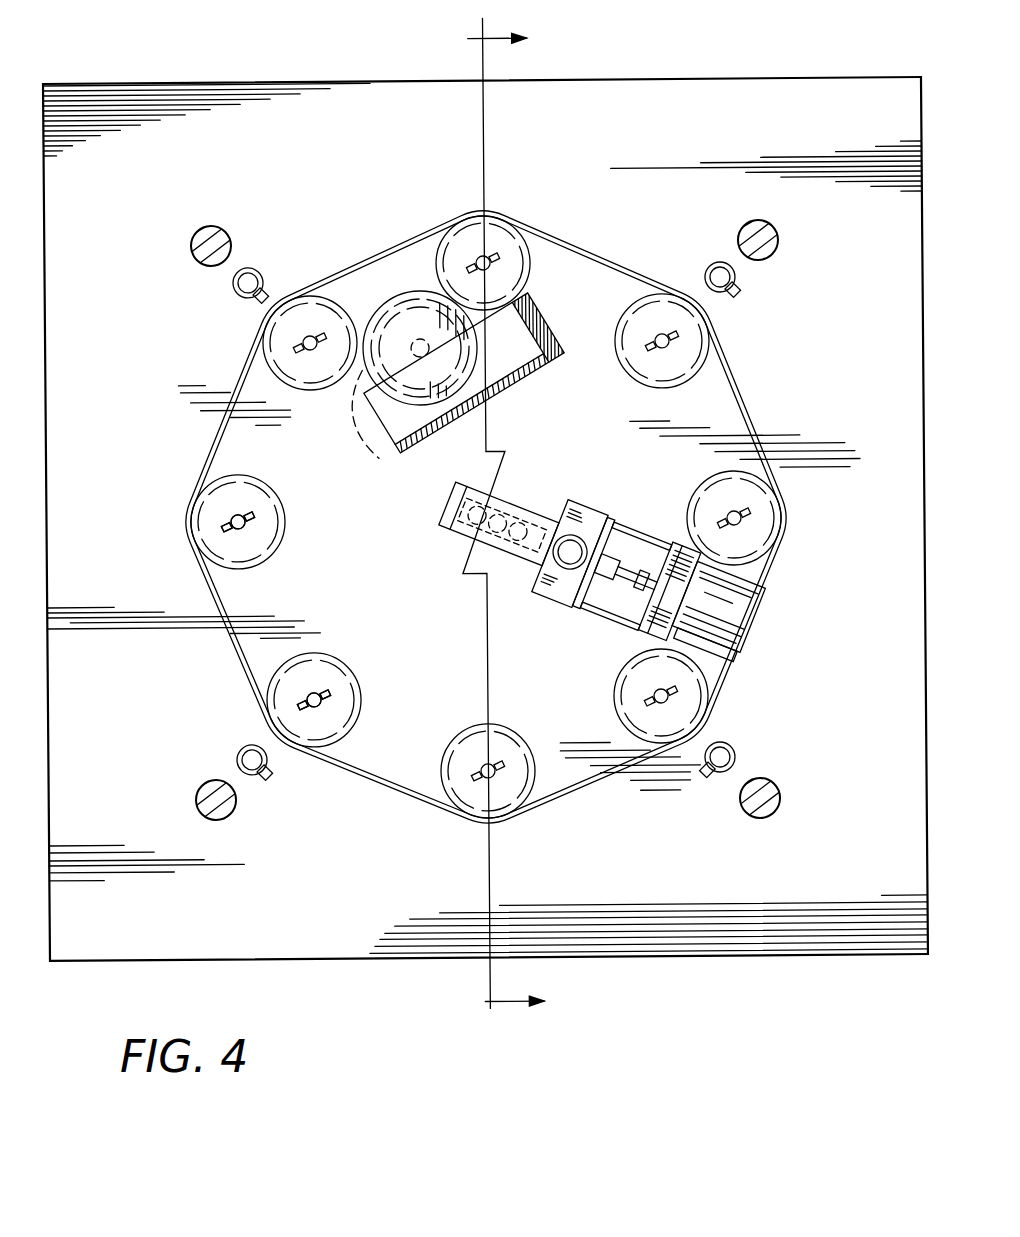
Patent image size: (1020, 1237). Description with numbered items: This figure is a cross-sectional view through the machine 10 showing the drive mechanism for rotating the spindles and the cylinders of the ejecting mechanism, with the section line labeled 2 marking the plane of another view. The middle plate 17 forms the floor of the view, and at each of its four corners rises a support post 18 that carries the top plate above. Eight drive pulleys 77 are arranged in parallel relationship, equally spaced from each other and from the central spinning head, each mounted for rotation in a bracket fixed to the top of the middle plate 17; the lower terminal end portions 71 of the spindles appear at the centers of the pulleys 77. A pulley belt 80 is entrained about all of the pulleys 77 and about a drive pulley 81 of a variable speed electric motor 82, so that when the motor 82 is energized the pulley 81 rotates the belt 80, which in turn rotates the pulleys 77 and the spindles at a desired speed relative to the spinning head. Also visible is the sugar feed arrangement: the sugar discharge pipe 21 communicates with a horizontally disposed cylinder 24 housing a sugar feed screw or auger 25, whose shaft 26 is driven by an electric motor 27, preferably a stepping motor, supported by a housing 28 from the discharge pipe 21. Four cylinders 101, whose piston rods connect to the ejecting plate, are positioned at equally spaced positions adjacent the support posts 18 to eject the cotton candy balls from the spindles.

The machine 10 is at (690, 76).
The middle plate 17 is at (688, 156).
The support posts 18 is at (189, 246).
The discharge pipe 21 is at (584, 514).
The cylinder 24 is at (514, 564).
The sugar feed screw or auger 25 is at (497, 524).
The shaft 26 is at (618, 589).
The electric motor 27 is at (731, 611).
The housing 28 is at (652, 542).
The lower terminal end portions 71 is at (239, 530).
The drive pulley 77 is at (325, 368).
The pulley belt 80 is at (365, 786).
The drive pulley 81 is at (463, 375).
The variable speed electric motor 82 is at (417, 303).
The cylinders 101 is at (261, 274).
The section line 2- 2 is at (501, 519).